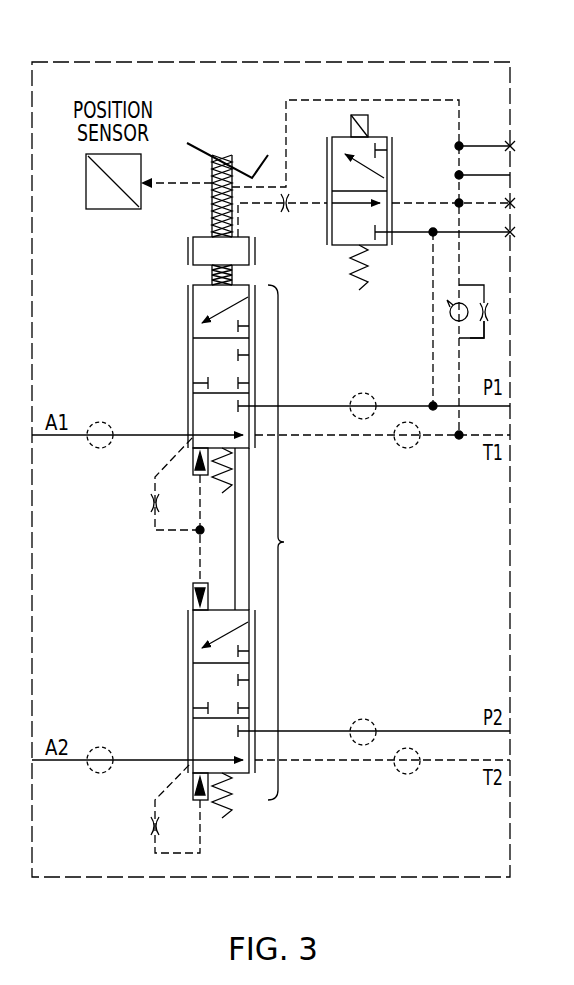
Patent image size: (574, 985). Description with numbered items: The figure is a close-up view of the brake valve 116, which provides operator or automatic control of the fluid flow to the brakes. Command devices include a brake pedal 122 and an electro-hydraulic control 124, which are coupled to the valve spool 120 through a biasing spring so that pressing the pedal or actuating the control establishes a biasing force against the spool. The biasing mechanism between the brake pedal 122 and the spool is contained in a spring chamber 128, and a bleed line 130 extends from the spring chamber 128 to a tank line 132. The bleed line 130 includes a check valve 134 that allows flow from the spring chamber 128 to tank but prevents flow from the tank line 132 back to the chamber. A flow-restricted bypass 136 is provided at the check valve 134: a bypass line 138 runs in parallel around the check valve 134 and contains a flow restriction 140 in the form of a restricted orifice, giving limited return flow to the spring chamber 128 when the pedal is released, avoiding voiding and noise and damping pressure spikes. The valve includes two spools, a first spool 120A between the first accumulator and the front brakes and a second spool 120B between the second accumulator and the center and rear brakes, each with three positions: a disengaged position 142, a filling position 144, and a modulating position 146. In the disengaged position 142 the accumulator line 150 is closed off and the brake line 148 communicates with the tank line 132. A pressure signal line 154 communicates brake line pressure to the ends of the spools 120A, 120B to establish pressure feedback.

The brake valve 116 is at (303, 50).
The bleed line 130 is at (376, 100).
The brake pedal 122 is at (207, 150).
The electro-hydraulic control 124 is at (373, 137).
The spring chamber 128 is at (233, 217).
The valve spool 120 is at (294, 542).
The first spool 120A is at (176, 292).
The second spool 120B is at (176, 617).
The filling position 144 is at (188, 313).
The modulating position 146 is at (188, 368).
The disengaged position 142 is at (188, 413).
The pressure signal line 154 is at (172, 455).
The brake line 148 is at (95, 447).
The accumulator line 150 is at (363, 394).
The tank line 132 is at (405, 448).
The check valve 134 is at (452, 305).
The flow-restricted bypass 136 is at (488, 282).
The flow restriction 140 is at (492, 312).
The bypass line 138 is at (470, 338).